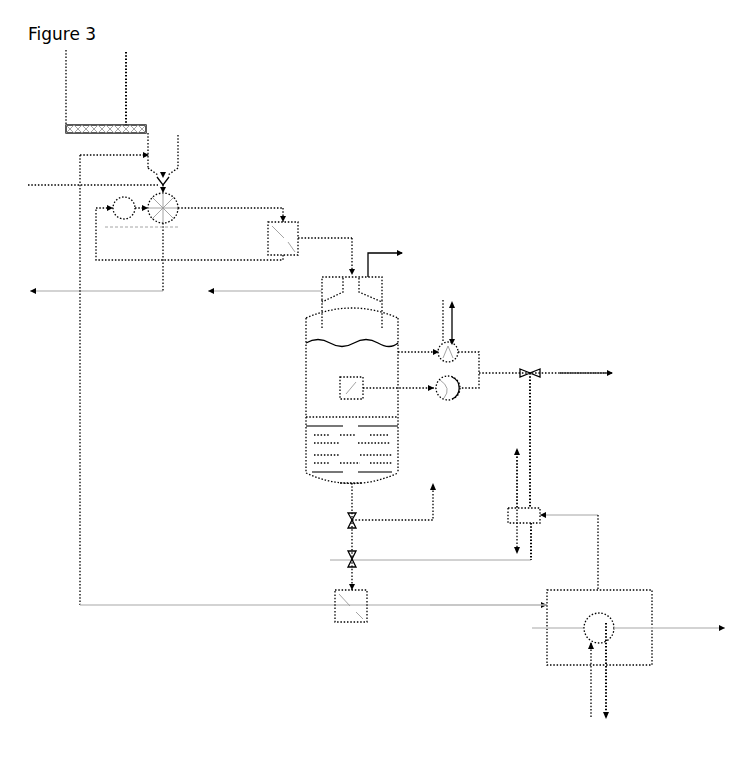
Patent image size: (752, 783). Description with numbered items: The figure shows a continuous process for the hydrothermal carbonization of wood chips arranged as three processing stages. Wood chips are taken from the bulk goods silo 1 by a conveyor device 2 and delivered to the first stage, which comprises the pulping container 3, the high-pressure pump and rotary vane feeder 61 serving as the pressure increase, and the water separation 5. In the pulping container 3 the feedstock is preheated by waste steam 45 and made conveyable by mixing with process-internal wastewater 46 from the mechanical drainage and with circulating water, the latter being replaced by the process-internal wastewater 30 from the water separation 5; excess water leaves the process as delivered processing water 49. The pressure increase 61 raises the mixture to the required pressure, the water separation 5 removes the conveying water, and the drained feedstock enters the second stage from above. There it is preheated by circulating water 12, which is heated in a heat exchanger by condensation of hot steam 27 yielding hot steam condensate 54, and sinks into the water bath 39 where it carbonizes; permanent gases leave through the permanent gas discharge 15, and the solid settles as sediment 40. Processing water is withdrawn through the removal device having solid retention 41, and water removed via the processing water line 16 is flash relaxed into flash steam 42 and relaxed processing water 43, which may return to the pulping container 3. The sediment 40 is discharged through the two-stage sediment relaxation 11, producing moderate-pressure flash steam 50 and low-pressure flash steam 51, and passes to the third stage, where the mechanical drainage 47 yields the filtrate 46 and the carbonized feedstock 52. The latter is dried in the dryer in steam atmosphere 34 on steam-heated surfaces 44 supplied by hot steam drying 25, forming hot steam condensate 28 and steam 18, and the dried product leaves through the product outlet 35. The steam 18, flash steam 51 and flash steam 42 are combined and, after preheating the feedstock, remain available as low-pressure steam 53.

The bulk goods silo 1 is at (66, 90).
The conveyor device 2 is at (139, 125).
The pulping container 3 is at (163, 135).
The water separation 5 is at (268, 238).
The sediment relaxation 11 is at (346, 521).
The circulating water 12 is at (481, 367).
The permanent gas discharge 15 is at (389, 253).
The processing water from the second processing stage 16 is at (508, 373).
The steam from the drying 18 is at (598, 552).
The hot steam drying 25 is at (591, 697).
The hot steam for heating the second processing stage 27 is at (443, 320).
The hot steam condensate from the drying 28 is at (606, 697).
The process-internal wastewater from the water separation 30 is at (226, 250).
The dryer in steam atmosphere 34 is at (561, 590).
The product outlet 35 is at (697, 628).
The water bath in the second processing stage 39 is at (306, 343).
The sediment in the second processing stage 40 is at (306, 425).
The removal device having solid retention 41 is at (340, 388).
The flash steam from the relaxation of processing water 42 is at (559, 448).
The relaxed processing water 43 is at (583, 373).
The steam-heated surfaces 44 is at (508, 627).
The waste steam for preheating 45 is at (50, 185).
The process-internal wastewater from mechanical drainage 46 is at (126, 291).
The mechanical drainage 47 is at (352, 622).
The delivered processing water 49 is at (50, 291).
The moderate-pressure flash steam from sediment relaxation 50 is at (388, 520).
The low-pressure flash steam from sediment relaxation 51 is at (455, 560).
The carbonized feedstock after mechanical drainage 52 is at (478, 605).
The low-pressure steam 53 is at (517, 477).
The hot steam condensate from the second processing stage 54 is at (452, 320).
The high-pressure pump and rotary vane feeder 61 is at (150, 224).